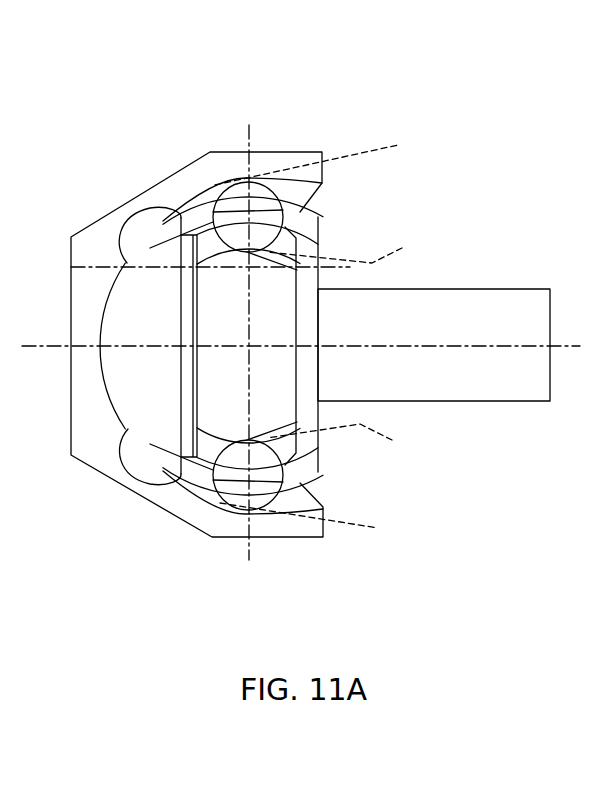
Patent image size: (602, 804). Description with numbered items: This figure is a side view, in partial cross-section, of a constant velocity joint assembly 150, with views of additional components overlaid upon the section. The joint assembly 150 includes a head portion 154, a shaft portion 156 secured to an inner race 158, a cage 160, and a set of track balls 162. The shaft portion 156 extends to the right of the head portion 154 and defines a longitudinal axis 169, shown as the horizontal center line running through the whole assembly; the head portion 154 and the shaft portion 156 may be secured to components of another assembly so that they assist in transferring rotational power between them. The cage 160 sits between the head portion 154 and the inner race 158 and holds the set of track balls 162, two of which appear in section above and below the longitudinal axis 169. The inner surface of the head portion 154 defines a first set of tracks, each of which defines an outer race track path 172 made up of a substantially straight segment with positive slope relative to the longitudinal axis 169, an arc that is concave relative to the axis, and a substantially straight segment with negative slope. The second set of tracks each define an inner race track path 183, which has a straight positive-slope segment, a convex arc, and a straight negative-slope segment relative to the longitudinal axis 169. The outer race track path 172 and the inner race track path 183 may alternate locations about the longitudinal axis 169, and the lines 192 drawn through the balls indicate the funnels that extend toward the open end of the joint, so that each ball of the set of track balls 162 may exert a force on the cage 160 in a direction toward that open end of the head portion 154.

The joint assembly 150 is at (463, 93).
The head portion 154 is at (205, 148).
The shaft portion 156 is at (482, 303).
The inner race 158 is at (296, 285).
The cage 160 is at (312, 452).
The set of track balls 162 is at (237, 182).
The longitudinal axis 169 is at (28, 343).
The outer race track path 172 is at (328, 220).
The inner race track path 183 is at (333, 250).
The contact lines 192 is at (347, 563).